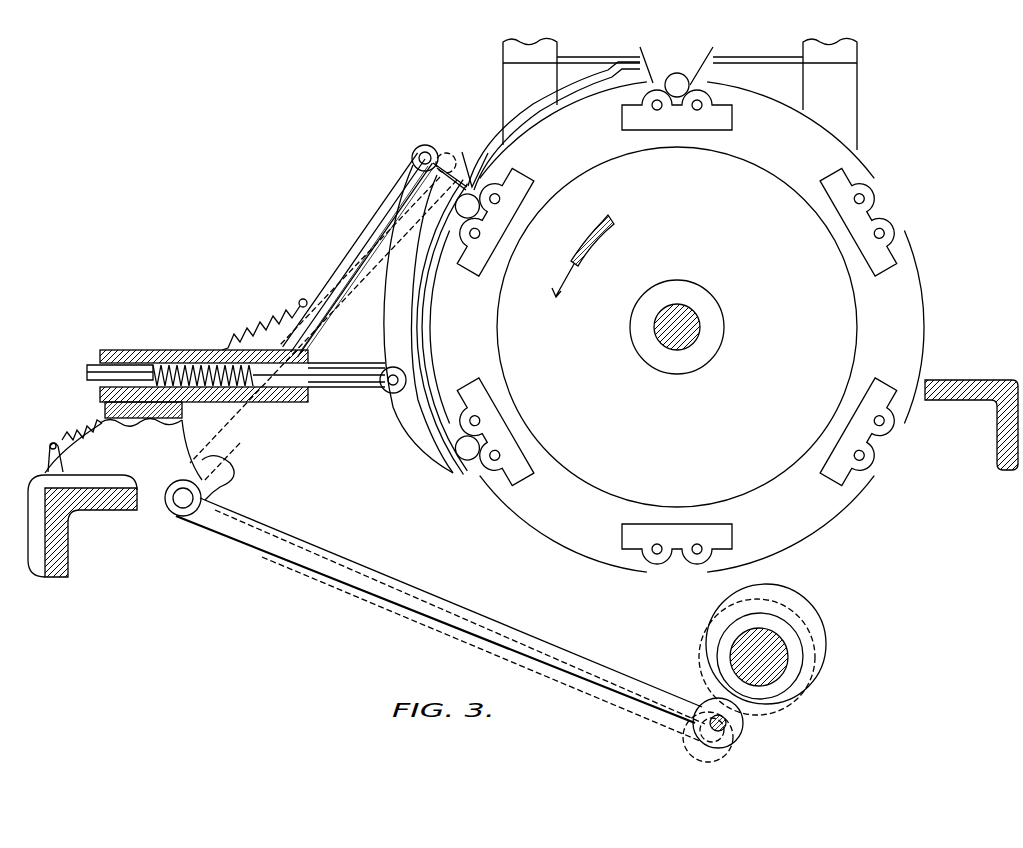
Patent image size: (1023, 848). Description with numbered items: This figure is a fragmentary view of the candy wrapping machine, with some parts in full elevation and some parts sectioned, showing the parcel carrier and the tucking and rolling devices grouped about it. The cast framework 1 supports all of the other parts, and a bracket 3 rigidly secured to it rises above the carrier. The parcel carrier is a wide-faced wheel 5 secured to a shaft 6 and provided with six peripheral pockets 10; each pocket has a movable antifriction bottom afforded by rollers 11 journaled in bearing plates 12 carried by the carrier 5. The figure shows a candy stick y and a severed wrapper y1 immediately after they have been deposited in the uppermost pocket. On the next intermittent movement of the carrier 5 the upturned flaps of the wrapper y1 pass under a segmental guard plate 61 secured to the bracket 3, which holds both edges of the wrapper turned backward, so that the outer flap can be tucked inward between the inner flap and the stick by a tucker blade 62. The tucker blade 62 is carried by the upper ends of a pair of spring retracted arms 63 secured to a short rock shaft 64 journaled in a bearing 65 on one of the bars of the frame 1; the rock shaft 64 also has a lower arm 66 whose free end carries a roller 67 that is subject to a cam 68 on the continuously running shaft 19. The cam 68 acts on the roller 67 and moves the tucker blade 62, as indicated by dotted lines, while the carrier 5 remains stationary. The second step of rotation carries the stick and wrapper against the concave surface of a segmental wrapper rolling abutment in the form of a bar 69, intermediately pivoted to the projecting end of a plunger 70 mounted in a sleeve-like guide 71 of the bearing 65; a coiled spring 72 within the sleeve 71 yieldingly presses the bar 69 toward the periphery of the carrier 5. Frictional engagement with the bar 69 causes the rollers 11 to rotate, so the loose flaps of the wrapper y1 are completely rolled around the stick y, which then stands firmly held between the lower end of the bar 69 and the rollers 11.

The framework 1 is at (64, 566).
The bracket 3 is at (518, 80).
The parcel carrying wheel 5 is at (900, 335).
The shaft 6 is at (690, 325).
The peripheral pockets 10 is at (885, 212).
The rollers 11 is at (697, 110).
The bearing plates 12 is at (640, 118).
The continuously running shaft 19 is at (772, 670).
The segmental guard plate 61 is at (513, 118).
The tucker blade 62 is at (434, 156).
The spring retracted arms 63 is at (360, 243).
The rock shaft 64 is at (183, 505).
The bearing 65 is at (160, 483).
The lower arm 66 is at (250, 545).
The roller 67 is at (725, 730).
The cam 68 is at (806, 618).
The wrapper rolling abutment bar 69 is at (393, 395).
The plunger 70 is at (340, 395).
The sleeve-like guide 71 is at (130, 355).
The coiled spring 72 is at (192, 365).
The candy stick y is at (682, 86).
The severed wrapper y1 is at (650, 70).